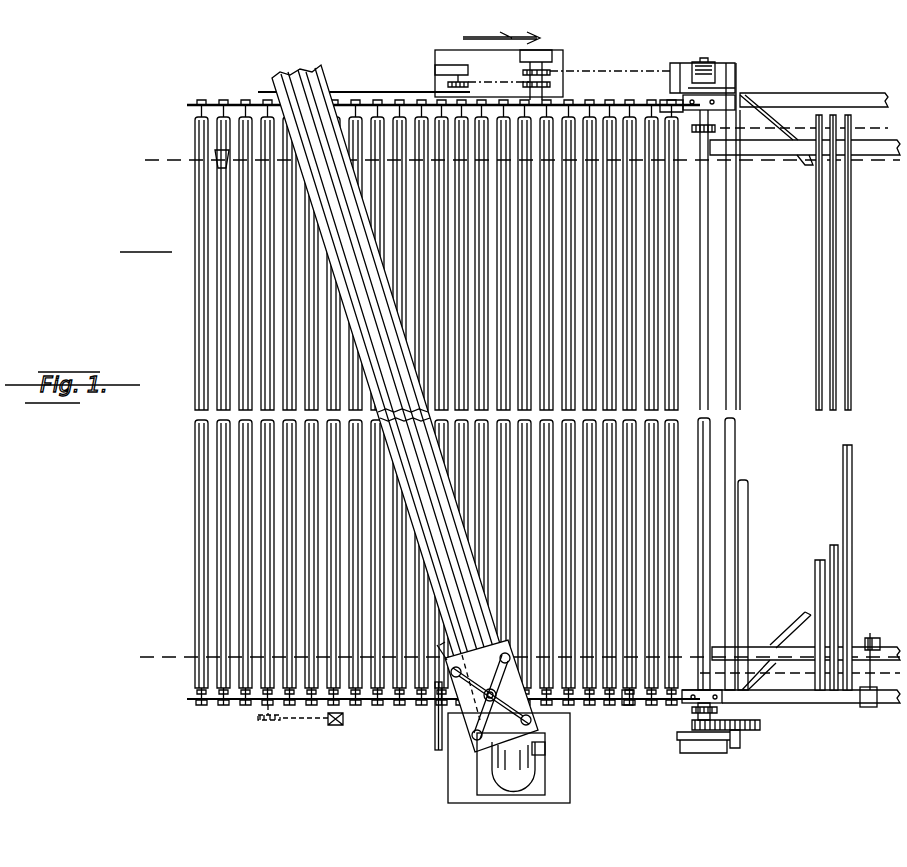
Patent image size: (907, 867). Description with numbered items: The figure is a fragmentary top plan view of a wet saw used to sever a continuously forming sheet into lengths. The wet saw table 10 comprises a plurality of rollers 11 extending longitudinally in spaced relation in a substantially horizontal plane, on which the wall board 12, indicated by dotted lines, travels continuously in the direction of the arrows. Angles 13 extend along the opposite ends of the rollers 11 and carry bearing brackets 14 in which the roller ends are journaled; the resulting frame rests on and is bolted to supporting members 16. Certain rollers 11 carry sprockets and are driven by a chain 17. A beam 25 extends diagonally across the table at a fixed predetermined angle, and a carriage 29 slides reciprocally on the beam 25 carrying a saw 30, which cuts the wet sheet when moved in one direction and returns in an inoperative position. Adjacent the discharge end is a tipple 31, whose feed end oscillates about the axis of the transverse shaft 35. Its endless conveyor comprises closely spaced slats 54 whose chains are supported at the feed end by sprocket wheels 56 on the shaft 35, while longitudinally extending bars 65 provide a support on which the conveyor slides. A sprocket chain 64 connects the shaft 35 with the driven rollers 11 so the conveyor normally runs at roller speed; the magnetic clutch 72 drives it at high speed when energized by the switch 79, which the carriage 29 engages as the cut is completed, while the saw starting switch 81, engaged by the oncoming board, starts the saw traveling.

The wet saw table 10 is at (185, 698).
The rollers 11 is at (192, 486).
The wall board or like material 12 is at (172, 162).
The angles 13 is at (632, 704).
The bearing brackets 14 is at (208, 104).
The supporting members 16 is at (570, 758).
The chain 17 is at (377, 103).
The beam 25 is at (312, 96).
The carriage 29 is at (471, 722).
The saw 30 is at (435, 738).
The tipple 31 is at (820, 95).
The transverse shaft 35 is at (708, 470).
The slats 54 is at (852, 276).
The sprocket wheels 56 is at (683, 696).
The sprocket chain 64 is at (615, 75).
The longitudinally extending bars 65 is at (770, 157).
The magnetic clutch 72 is at (712, 753).
The switch 79 is at (542, 760).
The saw starting switch 81 is at (880, 627).